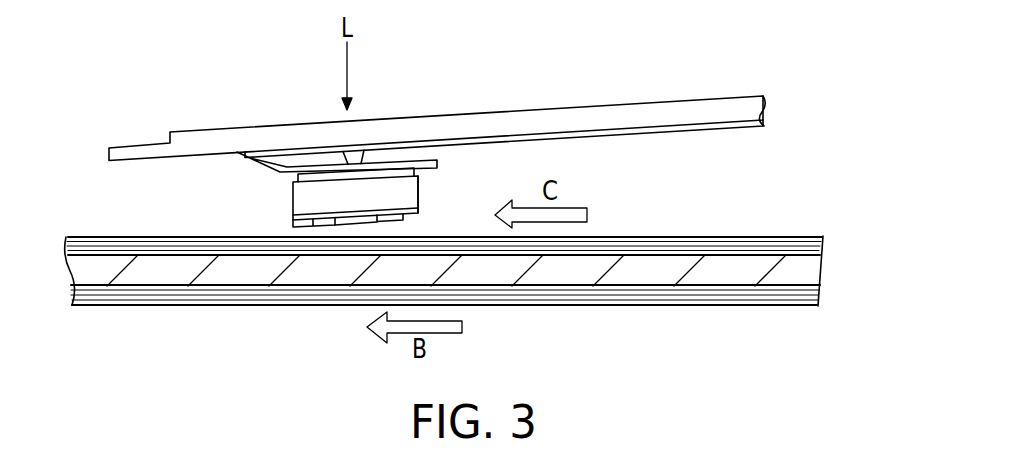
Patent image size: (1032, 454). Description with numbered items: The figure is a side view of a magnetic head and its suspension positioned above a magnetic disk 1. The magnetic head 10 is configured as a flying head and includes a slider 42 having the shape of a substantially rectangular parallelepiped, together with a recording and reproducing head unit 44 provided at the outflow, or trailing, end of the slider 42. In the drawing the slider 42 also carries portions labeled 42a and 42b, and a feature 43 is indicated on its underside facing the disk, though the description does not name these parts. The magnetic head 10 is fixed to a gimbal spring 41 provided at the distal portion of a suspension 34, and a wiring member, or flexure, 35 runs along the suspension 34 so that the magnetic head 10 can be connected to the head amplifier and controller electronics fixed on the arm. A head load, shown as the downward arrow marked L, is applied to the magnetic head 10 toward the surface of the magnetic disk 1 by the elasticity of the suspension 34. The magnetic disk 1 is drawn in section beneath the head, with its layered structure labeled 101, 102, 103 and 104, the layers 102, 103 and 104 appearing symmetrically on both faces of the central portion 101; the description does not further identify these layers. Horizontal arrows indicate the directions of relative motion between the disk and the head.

The magnetic disk 1 is at (476, 250).
The magnetic head 10 is at (362, 209).
The suspension 34 is at (634, 104).
The wiring member (flexure) 35 is at (692, 131).
The gimbal spring 41 is at (422, 158).
The slider 42 is at (328, 192).
The side surface of head body 42a is at (420, 181).
The nozzle plate 42b is at (300, 217).
The nozzle 43 is at (348, 226).
The recording and reproducing head unit 44 is at (300, 193).
The core layer 101 is at (713, 277).
The surface layer 102 is at (477, 272).
The intermediate layer 103 is at (750, 237).
The outer layer 104 is at (812, 236).